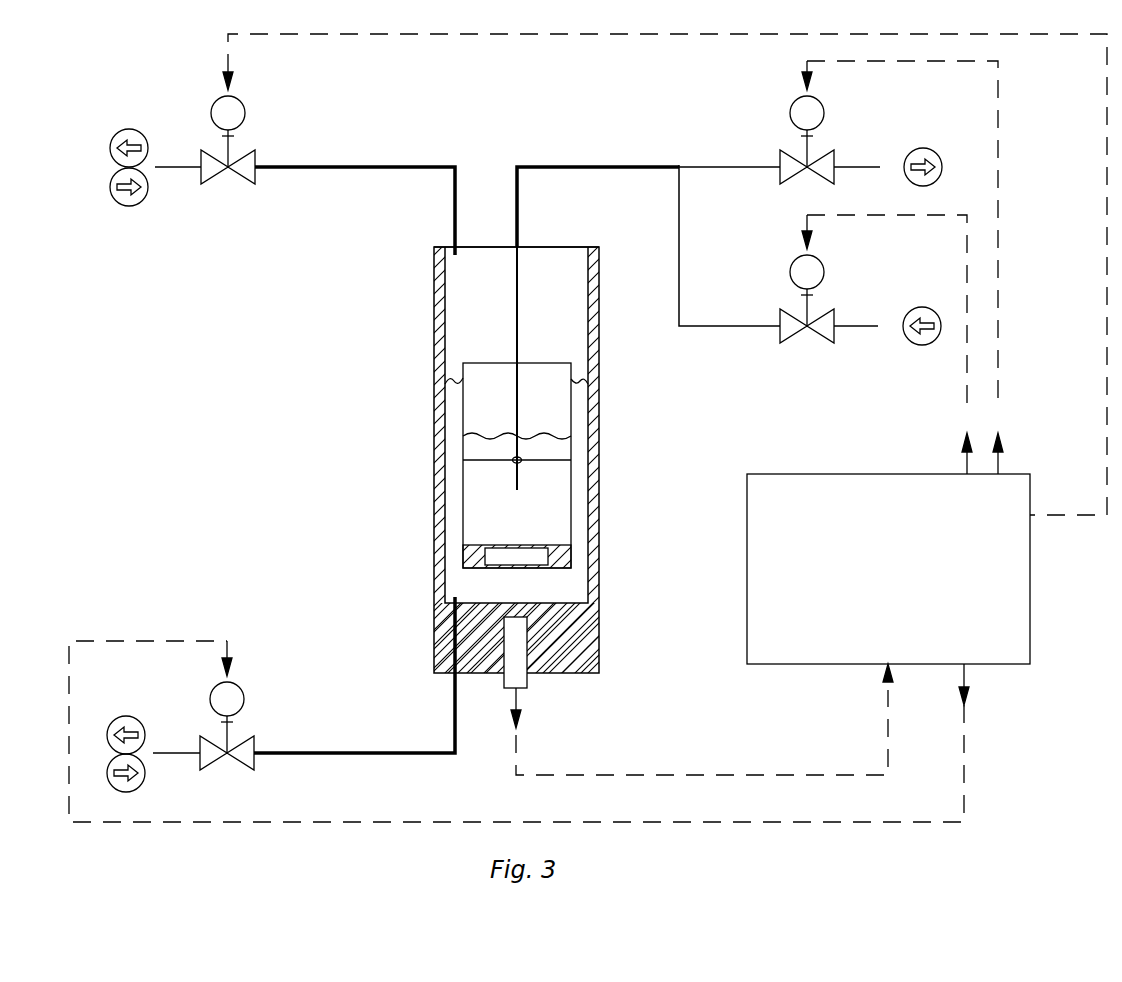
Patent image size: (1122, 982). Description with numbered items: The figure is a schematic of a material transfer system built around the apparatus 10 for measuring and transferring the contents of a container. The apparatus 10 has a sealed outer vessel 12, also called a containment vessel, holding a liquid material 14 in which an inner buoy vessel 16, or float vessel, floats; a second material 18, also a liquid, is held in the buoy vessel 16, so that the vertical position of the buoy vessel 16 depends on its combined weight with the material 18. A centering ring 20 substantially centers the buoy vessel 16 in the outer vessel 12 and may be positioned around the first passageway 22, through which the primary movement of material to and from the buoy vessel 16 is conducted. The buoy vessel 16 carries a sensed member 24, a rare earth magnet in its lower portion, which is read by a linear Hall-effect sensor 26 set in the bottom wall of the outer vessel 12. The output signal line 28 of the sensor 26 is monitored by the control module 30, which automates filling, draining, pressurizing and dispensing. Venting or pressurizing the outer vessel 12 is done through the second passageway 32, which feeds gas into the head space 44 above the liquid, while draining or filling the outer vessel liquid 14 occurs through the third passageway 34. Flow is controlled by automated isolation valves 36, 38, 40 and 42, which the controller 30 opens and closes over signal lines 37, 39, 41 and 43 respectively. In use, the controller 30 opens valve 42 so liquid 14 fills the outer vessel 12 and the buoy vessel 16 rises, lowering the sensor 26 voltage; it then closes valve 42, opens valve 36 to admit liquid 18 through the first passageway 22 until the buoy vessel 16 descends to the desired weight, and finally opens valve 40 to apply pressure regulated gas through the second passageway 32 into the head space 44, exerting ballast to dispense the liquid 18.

The apparatus 10 is at (628, 270).
The outer vessel 12 is at (431, 298).
The material 14 is at (445, 408).
The inner buoy vessel 16 is at (571, 404).
The material 18 is at (463, 460).
The centering ring 20 is at (486, 462).
The first passageway 22 is at (648, 165).
The sensed member 24 is at (571, 565).
The sensor 26 is at (530, 650).
The output signal line 28 is at (697, 775).
The control module 30 is at (775, 474).
The second passageway 32 is at (335, 165).
The third passageway 34 is at (393, 752).
The valve 36 is at (835, 323).
The signal line 37 is at (966, 365).
The valve 38 is at (835, 163).
The signal line 39 is at (998, 322).
The valve 40 is at (201, 155).
The signal line 41 is at (1106, 225).
The valve 42 is at (257, 745).
The signal line 43 is at (965, 775).
The head space 44 is at (487, 250).